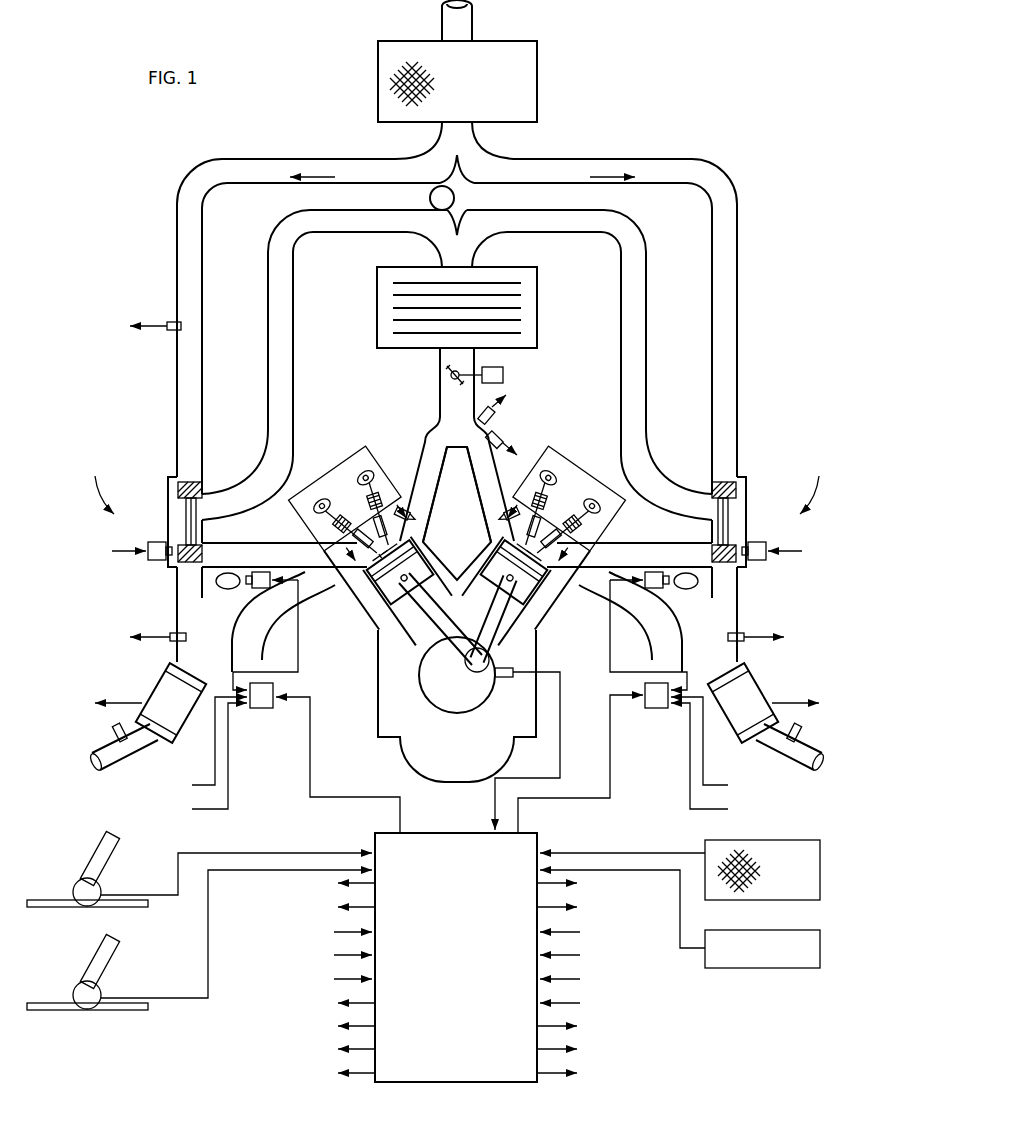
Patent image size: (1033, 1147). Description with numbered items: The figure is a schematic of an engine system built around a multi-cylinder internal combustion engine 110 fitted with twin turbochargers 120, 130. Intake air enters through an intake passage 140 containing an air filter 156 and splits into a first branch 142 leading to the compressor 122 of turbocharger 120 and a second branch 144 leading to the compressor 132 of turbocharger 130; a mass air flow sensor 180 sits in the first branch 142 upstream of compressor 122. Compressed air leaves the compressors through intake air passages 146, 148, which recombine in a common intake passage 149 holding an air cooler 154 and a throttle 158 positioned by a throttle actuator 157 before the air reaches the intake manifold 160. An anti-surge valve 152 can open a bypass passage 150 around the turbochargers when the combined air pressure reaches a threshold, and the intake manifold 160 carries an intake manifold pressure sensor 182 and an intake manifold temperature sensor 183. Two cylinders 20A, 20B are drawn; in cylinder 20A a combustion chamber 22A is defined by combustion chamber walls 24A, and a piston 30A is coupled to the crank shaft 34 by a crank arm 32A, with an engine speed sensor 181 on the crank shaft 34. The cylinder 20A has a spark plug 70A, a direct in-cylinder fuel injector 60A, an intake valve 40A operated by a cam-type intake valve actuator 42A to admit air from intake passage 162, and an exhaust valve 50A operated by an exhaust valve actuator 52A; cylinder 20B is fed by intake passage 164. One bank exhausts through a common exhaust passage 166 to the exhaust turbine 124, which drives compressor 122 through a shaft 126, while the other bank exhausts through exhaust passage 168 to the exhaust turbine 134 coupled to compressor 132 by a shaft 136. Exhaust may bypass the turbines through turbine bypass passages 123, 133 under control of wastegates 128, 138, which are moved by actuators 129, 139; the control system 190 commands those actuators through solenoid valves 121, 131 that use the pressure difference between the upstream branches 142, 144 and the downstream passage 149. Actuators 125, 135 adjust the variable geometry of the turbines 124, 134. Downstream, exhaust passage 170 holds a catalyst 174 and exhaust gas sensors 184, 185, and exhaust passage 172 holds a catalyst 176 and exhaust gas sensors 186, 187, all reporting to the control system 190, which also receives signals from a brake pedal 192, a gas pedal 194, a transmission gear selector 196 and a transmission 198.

The internal combustion engine 110 is at (392, 755).
The turbocharger 120 is at (95, 483).
The solenoid valve 121 is at (266, 708).
The compressor 122 is at (176, 490).
The turbine bypass passage 123 is at (222, 590).
The exhaust turbine 124 is at (170, 560).
The actuator 125 is at (155, 542).
The shaft 126 is at (197, 525).
The wastegate 128 is at (244, 590).
The actuator 129 is at (264, 588).
The turbocharger 130 is at (820, 483).
The solenoid valve 131 is at (654, 708).
The compressor 132 is at (738, 490).
The turbine bypass passage 133 is at (692, 590).
The exhaust turbine 134 is at (744, 560).
The actuator 135 is at (759, 542).
The shaft 136 is at (717, 525).
The wastegate 138 is at (672, 590).
The actuator 139 is at (651, 588).
The intake passage 140 is at (473, 22).
The first branch of the intake passage 142 is at (258, 158).
The second branch of the intake passage 144 is at (661, 158).
The intake air passage 146 is at (294, 313).
The intake air passage 148 is at (647, 313).
The common intake passage 149 is at (439, 393).
The bypass passage 150 is at (457, 190).
The anti-surge valve 152 is at (429, 198).
The air cooler 154 is at (538, 318).
The air filter 156 is at (538, 87).
The throttle actuator 157 is at (505, 372).
The throttle 158 is at (448, 370).
The intake manifold 160 is at (436, 424).
The intake passage 162 is at (446, 490).
The intake passage 164 is at (486, 470).
The exhaust passage 166 is at (288, 543).
The exhaust passage 168 is at (626, 543).
The exhaust passage 170 is at (204, 660).
The exhaust passage 172 is at (712, 660).
The catalyst 174 is at (160, 695).
The catalyst 176 is at (758, 695).
The mass air flow sensor 180 is at (172, 322).
The engine speed sensor 181 is at (503, 678).
The intake manifold pressure sensor 182 is at (500, 416).
The intake manifold temperature sensor 183 is at (508, 440).
The exhaust gas sensor 184 is at (177, 633).
The exhaust gas sensor 185 is at (115, 732).
The exhaust gas sensor 186 is at (738, 633).
The exhaust gas sensor 187 is at (799, 732).
The control system 190 is at (470, 966).
The brake pedal 192 is at (93, 855).
The gas pedal 194 is at (93, 955).
The transmission gear selector 196 is at (821, 948).
The transmission 198 is at (821, 878).
The cylinder 20A is at (383, 590).
The cylinder 20B is at (540, 618).
The combustion chamber 22A is at (400, 572).
The combustion chamber walls 24A is at (389, 607).
The piston 30A is at (431, 566).
The crank arm 32A is at (437, 650).
The crank shaft 34 is at (460, 697).
The intake valve 40A is at (377, 518).
The intake valve actuator 42A is at (345, 498).
The exhaust valve 50A is at (380, 556).
The exhaust valve actuator 52A is at (322, 506).
The fuel injector 60A is at (405, 515).
The spark plug 70A is at (352, 532).